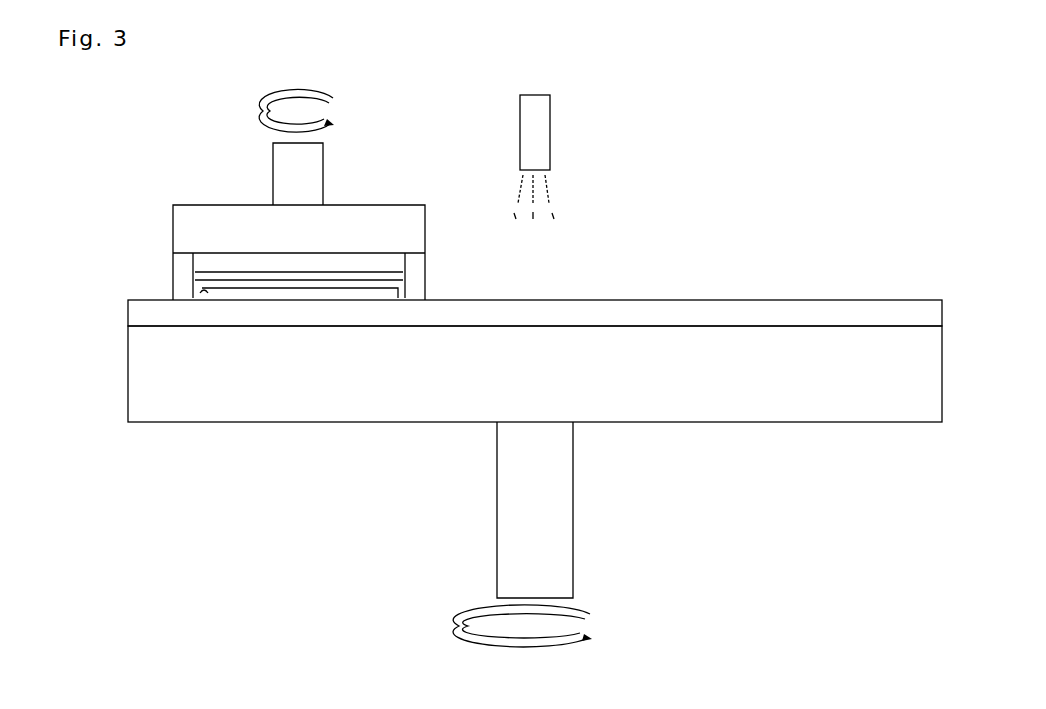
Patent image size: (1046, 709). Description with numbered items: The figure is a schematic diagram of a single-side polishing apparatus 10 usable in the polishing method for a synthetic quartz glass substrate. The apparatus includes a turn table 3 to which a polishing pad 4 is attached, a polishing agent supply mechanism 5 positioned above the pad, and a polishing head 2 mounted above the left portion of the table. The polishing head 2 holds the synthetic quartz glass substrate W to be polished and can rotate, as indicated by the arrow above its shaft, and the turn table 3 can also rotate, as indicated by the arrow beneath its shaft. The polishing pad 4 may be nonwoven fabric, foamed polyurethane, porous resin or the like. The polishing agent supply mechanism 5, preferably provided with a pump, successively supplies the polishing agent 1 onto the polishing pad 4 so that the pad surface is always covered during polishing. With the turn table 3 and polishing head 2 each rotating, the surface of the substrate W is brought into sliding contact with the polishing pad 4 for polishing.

The single-side polishing apparatus 10 is at (935, 118).
The polishing agent 1 is at (575, 201).
The polishing head 2 is at (160, 141).
The turn table 3 is at (237, 393).
The polishing pad 4 is at (845, 310).
The polishing agent supply mechanism 5 is at (543, 128).
The synthetic quartz glass substrate W is at (207, 293).